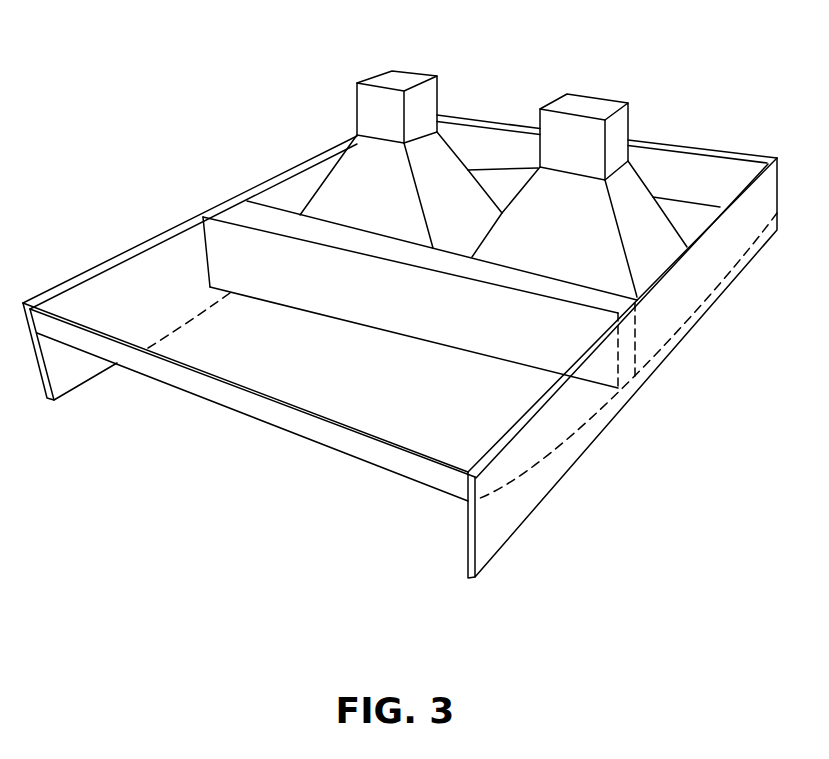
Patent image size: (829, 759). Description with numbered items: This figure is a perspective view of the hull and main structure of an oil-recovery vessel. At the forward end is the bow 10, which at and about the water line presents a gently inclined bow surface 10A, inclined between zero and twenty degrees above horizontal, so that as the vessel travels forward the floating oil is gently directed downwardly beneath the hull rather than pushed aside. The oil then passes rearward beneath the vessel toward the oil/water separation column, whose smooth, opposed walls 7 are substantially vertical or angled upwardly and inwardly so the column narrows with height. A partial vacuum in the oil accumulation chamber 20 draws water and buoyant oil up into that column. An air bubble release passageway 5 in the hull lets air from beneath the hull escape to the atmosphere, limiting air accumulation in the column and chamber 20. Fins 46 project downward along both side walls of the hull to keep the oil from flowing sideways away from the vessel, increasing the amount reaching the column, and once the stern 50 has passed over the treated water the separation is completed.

The air bubble release passageway 5 is at (602, 303).
The walls 7 is at (650, 252).
The bow 10 is at (287, 420).
The gently inclined bow surface 10A is at (180, 298).
The oil accumulation chamber 20 is at (423, 100).
The fins 46 is at (148, 325).
The stern 50 is at (695, 170).